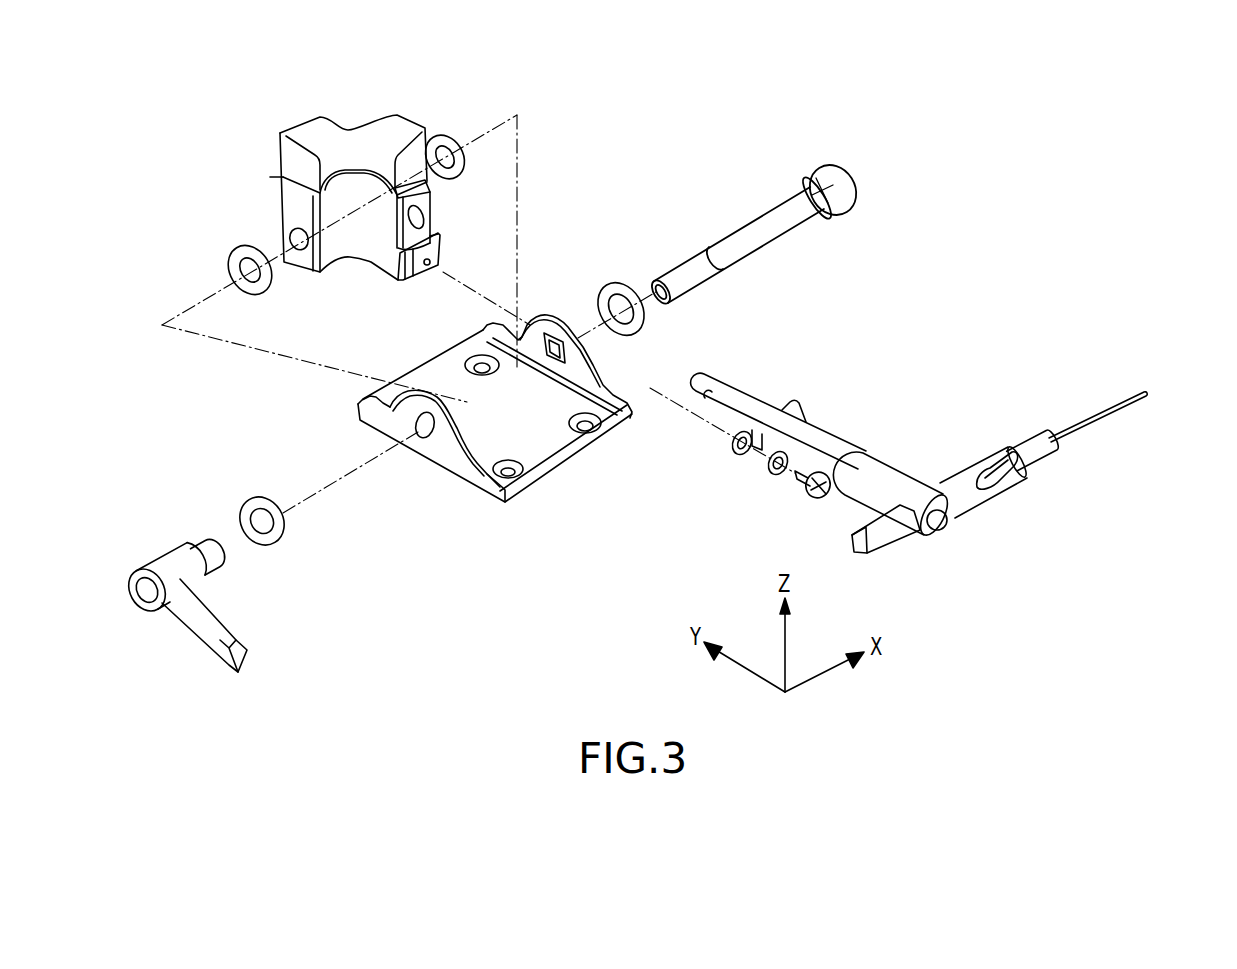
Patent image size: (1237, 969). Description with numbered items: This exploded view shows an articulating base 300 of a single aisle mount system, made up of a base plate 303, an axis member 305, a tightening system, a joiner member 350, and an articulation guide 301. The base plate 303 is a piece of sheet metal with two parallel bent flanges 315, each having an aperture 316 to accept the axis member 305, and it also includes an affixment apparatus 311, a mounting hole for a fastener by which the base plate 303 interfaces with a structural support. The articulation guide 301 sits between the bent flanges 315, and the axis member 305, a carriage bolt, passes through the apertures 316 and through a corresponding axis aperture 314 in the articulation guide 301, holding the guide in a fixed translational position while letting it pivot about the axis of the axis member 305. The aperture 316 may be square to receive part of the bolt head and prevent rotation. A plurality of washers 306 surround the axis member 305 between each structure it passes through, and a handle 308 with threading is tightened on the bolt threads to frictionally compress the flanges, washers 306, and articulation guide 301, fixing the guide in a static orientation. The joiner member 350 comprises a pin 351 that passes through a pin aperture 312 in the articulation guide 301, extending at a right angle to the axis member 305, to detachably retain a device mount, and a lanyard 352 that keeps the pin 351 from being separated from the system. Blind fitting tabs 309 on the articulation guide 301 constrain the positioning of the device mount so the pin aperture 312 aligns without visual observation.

The articulating base 300 is at (550, 93).
The articulation guide 301 is at (399, 200).
The base plate 303 is at (539, 419).
The axis member 305 is at (790, 208).
The washer 306 is at (458, 138).
The handle 308 is at (197, 575).
The blind fitting tabs 309 is at (280, 179).
The affixment apparatus 311 is at (517, 481).
The pin aperture 312 is at (427, 213).
The axis aperture 314 is at (302, 247).
The bent flanges 315 is at (586, 384).
The aperture 316 is at (543, 340).
The joiner member 350 is at (955, 459).
The pin 351 is at (890, 523).
The lanyard 352 is at (1026, 498).